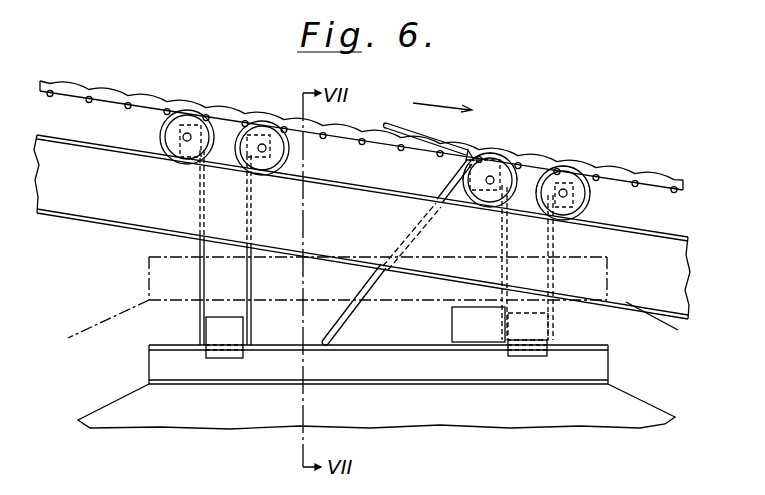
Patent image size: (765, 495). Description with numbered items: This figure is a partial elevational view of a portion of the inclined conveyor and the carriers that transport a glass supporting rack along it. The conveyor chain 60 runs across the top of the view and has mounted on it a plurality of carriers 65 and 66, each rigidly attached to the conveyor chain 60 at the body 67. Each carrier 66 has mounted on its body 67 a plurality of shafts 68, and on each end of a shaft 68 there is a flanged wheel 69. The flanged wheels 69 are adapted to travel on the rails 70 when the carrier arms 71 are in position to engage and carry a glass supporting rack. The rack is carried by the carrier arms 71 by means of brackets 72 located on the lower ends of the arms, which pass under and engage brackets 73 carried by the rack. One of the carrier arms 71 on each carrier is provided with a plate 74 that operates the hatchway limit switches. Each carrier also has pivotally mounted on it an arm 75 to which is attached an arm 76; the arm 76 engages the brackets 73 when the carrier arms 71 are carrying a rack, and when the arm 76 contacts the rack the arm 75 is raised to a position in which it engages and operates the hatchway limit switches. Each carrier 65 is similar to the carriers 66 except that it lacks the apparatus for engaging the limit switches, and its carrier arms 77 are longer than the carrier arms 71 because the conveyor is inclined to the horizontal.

The conveyor chain 60 is at (147, 97).
The carrier 65 is at (156, 128).
The carrier 66 is at (529, 172).
The carrier body 67 is at (226, 122).
The shaft 68 is at (185, 140).
The flanged wheel 69 is at (473, 196).
The rail 70 is at (125, 218).
The carrier arm 71 is at (535, 245).
The bracket 72 is at (233, 352).
The bracket 73 is at (376, 387).
The plate 74 is at (502, 263).
The arm 75 is at (429, 131).
The arm 76 is at (355, 306).
The carrier arm 77 is at (225, 247).